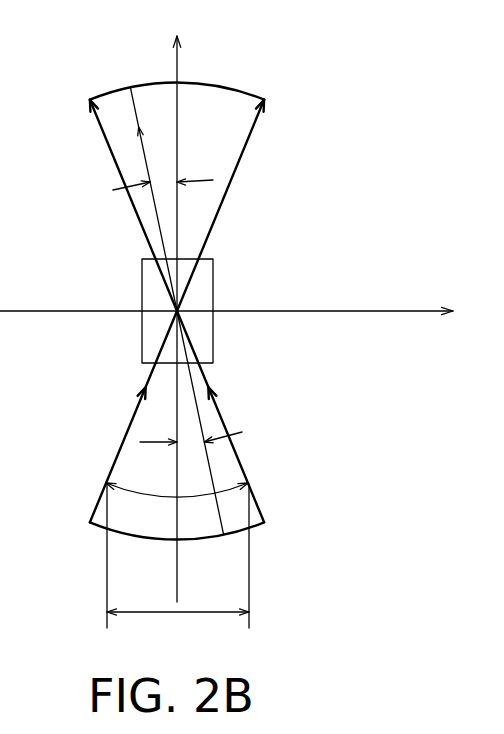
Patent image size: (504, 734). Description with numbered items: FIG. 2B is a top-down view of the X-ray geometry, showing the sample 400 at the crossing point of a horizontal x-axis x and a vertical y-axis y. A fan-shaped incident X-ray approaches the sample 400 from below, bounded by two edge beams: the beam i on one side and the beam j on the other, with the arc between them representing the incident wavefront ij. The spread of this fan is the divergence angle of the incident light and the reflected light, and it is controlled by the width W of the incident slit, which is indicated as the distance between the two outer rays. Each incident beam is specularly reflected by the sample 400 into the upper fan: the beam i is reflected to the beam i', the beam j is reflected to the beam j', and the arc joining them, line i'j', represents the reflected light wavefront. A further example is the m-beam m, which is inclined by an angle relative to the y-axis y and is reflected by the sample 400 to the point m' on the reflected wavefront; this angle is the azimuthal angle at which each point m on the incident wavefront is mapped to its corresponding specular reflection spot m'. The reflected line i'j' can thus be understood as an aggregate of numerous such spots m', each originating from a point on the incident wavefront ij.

The sample 400 is at (202, 288).
The x-axis x is at (235, 311).
The y-axis y is at (177, 305).
The beam i is at (130, 431).
The beam j is at (224, 431).
The m-beam m is at (205, 433).
The reflected beam i' is at (225, 191).
The reflected beam j' is at (127, 189).
The reflected point m' is at (145, 184).
The width of the incident slit W is at (178, 561).